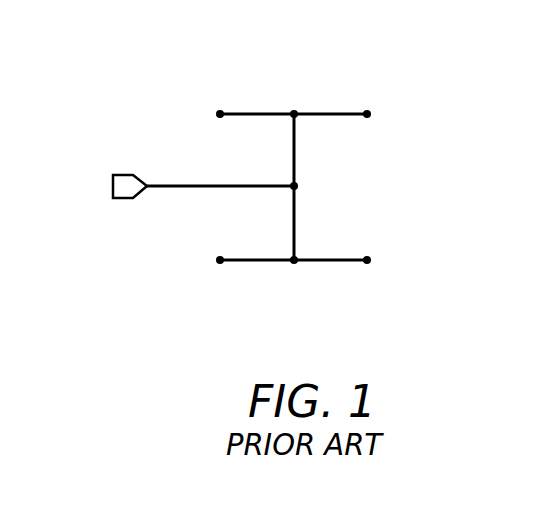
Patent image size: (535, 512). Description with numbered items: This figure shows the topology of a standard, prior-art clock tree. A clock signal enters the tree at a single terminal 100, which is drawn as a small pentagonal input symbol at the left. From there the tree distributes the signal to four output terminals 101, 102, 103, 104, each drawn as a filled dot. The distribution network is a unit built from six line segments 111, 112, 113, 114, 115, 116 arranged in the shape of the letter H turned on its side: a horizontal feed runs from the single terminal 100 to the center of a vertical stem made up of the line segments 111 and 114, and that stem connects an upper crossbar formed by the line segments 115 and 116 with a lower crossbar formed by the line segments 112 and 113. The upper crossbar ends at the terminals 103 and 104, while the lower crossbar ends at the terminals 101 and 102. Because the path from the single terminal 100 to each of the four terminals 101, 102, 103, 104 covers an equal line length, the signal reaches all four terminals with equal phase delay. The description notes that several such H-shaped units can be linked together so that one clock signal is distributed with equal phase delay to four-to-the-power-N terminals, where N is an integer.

The single terminal 100 is at (178, 168).
The terminal 101 is at (191, 242).
The terminal 102 is at (400, 242).
The terminal 103 is at (193, 98).
The terminal 104 is at (396, 98).
The line segment 111 is at (332, 223).
The line segment 112 is at (259, 287).
The line segment 113 is at (346, 288).
The line segment 114 is at (257, 152).
The line segment 115 is at (243, 76).
The line segment 116 is at (338, 82).